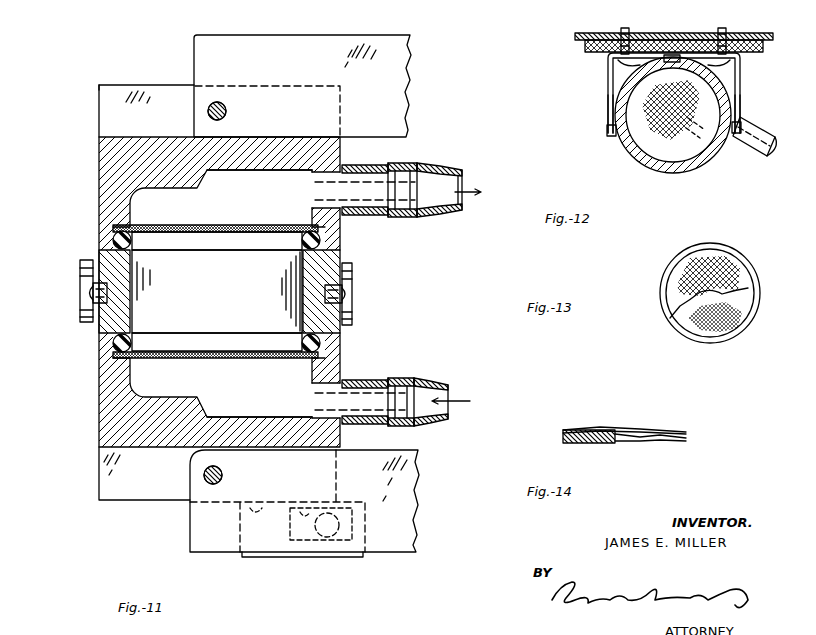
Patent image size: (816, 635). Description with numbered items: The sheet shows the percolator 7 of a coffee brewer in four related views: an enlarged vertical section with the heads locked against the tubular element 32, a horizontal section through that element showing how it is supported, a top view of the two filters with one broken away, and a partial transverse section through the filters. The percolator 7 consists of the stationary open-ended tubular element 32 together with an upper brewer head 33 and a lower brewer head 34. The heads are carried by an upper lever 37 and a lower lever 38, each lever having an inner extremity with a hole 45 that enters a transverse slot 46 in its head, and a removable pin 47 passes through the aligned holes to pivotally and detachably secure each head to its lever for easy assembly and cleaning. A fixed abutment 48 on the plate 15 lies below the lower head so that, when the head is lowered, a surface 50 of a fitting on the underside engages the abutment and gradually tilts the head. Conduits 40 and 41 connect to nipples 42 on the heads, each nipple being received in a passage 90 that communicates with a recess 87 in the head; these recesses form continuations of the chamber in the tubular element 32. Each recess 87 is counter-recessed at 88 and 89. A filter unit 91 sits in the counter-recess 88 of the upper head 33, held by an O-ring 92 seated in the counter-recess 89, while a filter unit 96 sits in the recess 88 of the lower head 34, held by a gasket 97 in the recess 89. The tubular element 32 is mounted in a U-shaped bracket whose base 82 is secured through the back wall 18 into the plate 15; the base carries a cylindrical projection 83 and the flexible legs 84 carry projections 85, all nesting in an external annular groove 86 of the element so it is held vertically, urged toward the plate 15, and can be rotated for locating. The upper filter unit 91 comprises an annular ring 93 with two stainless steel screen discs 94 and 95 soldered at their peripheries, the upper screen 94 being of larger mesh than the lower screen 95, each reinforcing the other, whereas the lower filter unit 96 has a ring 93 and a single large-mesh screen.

In FIG. 11, the percolator 7 is at (93, 78).
In FIG. 12, the plate 15 is at (765, 34).
In FIG. 12, the back wall 18 is at (766, 50).
In FIG. 11, the tubular element 32 is at (100, 325).
In FIG. 12, the tubular element 32 is at (632, 152).
In FIG. 11, the upper brewer head 33 is at (99, 153).
In FIG. 11, the lower brewer head 34 is at (99, 407).
In FIG. 11, the upper lever 37 is at (408, 83).
In FIG. 11, the lower lever 38 is at (408, 528).
In FIG. 11, the conduit 40 is at (452, 172).
In FIG. 11, the conduit 41 is at (448, 381).
In FIG. 11, the nipple 42 is at (308, 190).
In FIG. 12, the nipple 42 is at (757, 135).
In FIG. 11, the hole 45 is at (223, 104).
In FIG. 11, the transverse slot 46 is at (99, 102).
In FIG. 11, the removable pin 47 is at (226, 113).
In FIG. 11, the fixed abutment 48 is at (336, 556).
In FIG. 11, the surface 50 is at (292, 531).
In FIG. 12, the base 82 is at (615, 62).
In FIG. 12, the cylindrical projection 83 is at (675, 54).
In FIG. 11, the legs 84 is at (82, 264).
In FIG. 12, the legs 84 is at (608, 92).
In FIG. 11, the projections 85 is at (95, 290).
In FIG. 12, the projections 85 is at (737, 124).
In FIG. 11, the external annular groove 86 is at (133, 285).
In FIG. 12, the external annular groove 86 is at (716, 166).
In FIG. 11, the recess 87 is at (217, 197).
In FIG. 11, the counter-recess 88 is at (132, 196).
In FIG. 11, the counter-recess 89 is at (112, 238).
In FIG. 11, the passage 90 is at (284, 176).
In FIG. 12, the passage 90 is at (700, 141).
In FIG. 11, the filter unit 91 is at (197, 231).
In FIG. 13, the filter unit 91 is at (756, 285).
In FIG. 11, the O-ring 92 is at (133, 241).
In FIG. 14, the annular ring 93 is at (563, 440).
In FIG. 13, the upper screen disc 94 is at (740, 273).
In FIG. 14, the upper screen disc 94 is at (682, 431).
In FIG. 13, the lower screen disc 95 is at (745, 310).
In FIG. 14, the lower screen disc 95 is at (690, 440).
In FIG. 11, the filter unit 96 is at (186, 363).
In FIG. 11, the gasket 97 is at (133, 344).